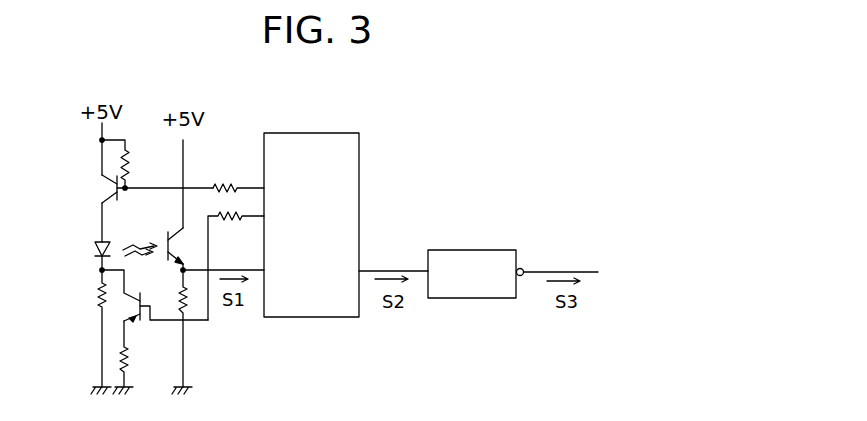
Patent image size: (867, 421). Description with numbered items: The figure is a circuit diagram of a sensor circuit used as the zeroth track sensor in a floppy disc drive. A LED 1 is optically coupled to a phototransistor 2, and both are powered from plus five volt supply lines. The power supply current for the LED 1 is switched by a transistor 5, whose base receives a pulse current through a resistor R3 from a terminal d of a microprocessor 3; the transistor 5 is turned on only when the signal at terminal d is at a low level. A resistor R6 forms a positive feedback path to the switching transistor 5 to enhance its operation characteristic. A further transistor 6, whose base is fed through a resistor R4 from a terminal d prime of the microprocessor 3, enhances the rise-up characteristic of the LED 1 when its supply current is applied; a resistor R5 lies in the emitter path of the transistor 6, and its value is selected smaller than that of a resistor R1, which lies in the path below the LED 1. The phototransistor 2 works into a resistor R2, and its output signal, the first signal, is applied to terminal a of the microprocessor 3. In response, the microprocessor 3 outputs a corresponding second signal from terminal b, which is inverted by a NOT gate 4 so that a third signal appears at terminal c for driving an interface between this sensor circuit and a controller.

The LED 1 is at (97, 243).
The phototransistor 2 is at (182, 240).
The microprocessor 3 is at (359, 146).
The NOT gate 4 is at (504, 250).
The transistor 5 is at (102, 189).
The transistor 6 is at (133, 304).
The resistor R1 is at (92, 290).
The resistor R2 is at (178, 300).
The resistor R3 is at (227, 182).
The resistor R4 is at (233, 221).
The resistor R5 is at (132, 358).
The resistor R6 is at (132, 163).